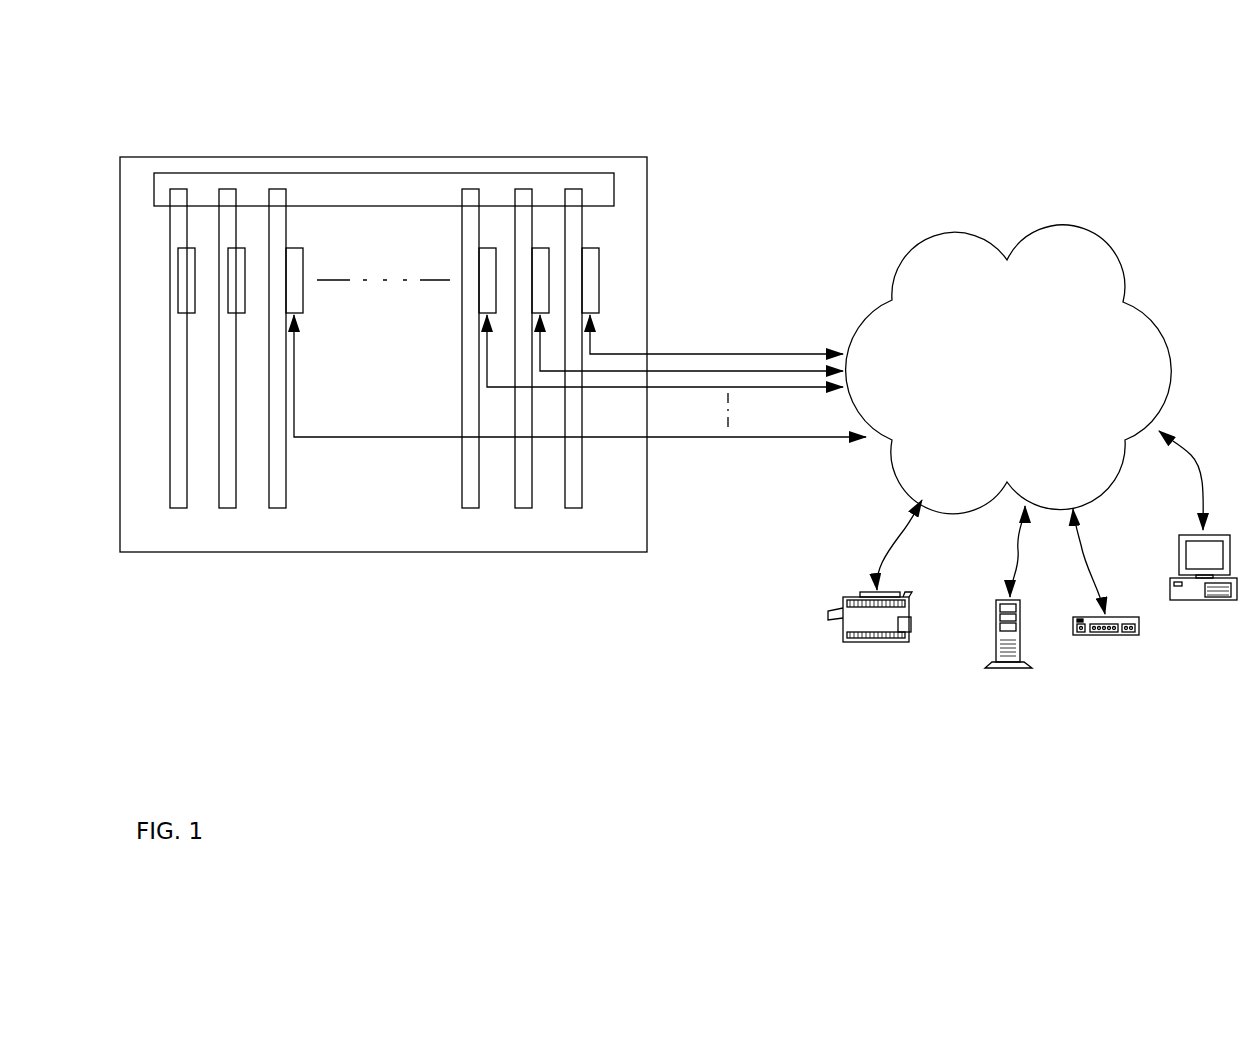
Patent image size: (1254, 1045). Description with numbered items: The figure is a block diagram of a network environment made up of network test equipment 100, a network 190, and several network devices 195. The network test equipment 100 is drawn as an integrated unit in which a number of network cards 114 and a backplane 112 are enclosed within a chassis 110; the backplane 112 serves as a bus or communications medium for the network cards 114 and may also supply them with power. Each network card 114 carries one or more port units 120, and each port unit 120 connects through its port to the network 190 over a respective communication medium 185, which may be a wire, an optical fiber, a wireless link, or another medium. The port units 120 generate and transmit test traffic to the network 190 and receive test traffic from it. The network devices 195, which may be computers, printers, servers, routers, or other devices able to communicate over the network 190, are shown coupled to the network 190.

The network test equipment 100 is at (300, 103).
The chassis 110 is at (383, 157).
The backplane 112 is at (565, 173).
The network cards 114 is at (594, 508).
The port unit 120 is at (598, 280).
The communication medium 185 is at (717, 353).
The network 190 is at (1009, 369).
The network devices 195 is at (1033, 576).